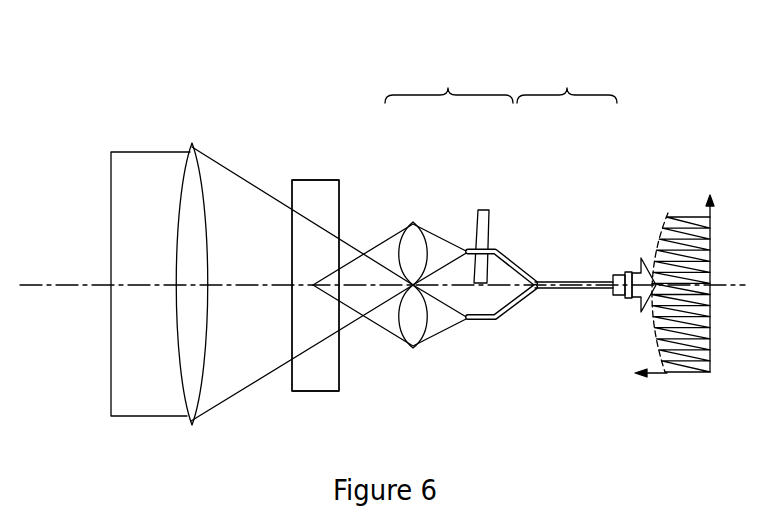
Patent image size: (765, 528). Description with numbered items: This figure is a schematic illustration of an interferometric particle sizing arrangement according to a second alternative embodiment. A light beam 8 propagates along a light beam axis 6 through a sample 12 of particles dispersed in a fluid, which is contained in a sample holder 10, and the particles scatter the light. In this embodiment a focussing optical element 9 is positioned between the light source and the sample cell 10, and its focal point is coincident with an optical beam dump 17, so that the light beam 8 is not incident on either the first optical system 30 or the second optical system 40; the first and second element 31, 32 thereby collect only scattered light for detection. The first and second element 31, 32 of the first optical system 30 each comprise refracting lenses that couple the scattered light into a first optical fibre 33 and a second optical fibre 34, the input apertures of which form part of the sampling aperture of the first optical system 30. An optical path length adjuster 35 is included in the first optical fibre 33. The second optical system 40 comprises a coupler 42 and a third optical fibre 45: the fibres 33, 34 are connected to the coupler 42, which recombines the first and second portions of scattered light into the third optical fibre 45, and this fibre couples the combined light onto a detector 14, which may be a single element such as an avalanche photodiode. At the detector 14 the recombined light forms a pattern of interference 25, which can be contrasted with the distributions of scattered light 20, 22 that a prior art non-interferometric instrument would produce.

The light beam axis 6 is at (50, 283).
The light beam 8 is at (143, 352).
The focussing optical element 9 is at (192, 142).
The sample holder 10 is at (291, 181).
The sample 12 is at (313, 368).
The detector 14 is at (619, 297).
The optical beam dump 17 is at (379, 318).
The distribution of scattered light 20 is at (664, 212).
The distribution of scattered light 22 is at (673, 212).
The pattern of interference 25 is at (683, 373).
The first optical system 30 is at (448, 88).
The first element 31 is at (408, 222).
The second element 32 is at (414, 350).
The first optical fibre 33 is at (516, 264).
The second optical fibre 34 is at (514, 308).
The optical path length adjuster 35 is at (477, 212).
The second optical system 40 is at (567, 88).
The coupler 42 is at (537, 280).
The third optical fibre 45 is at (580, 281).